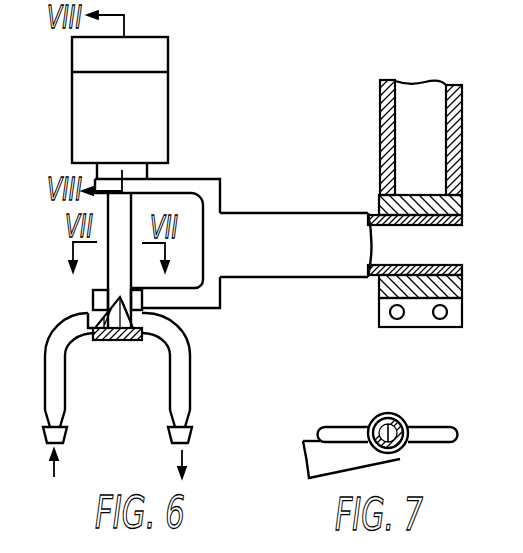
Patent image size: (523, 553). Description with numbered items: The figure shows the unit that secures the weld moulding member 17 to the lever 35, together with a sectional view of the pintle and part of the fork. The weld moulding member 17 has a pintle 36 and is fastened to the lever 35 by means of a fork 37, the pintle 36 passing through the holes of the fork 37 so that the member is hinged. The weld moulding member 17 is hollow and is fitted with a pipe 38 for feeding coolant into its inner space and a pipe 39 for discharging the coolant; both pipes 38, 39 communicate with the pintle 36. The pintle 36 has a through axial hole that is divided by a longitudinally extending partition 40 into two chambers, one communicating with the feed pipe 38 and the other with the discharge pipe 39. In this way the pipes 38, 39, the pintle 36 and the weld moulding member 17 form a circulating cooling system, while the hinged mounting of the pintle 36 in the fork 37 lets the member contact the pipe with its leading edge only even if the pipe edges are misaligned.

In FIG. 6, the weld moulding member 17 is at (144, 121).
In FIG. 6, the lever 35 is at (390, 205).
In FIG. 6, the pintle 36 is at (120, 268).
In FIG. 6, the fork 37 is at (204, 184).
In FIG. 6, the pipe for feeding a coolant 38 is at (56, 388).
In FIG. 6, the pipe for discharging the coolant 39 is at (183, 393).
In FIG. 6, the partition 40 is at (130, 338).
In FIG. 7, the partition 40 is at (403, 426).